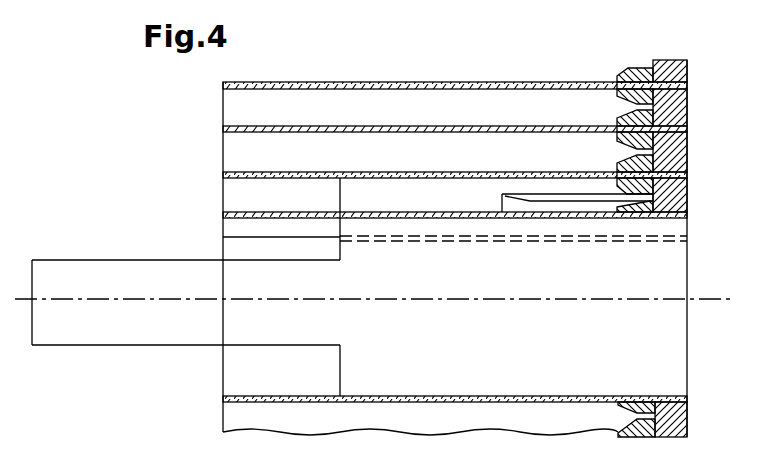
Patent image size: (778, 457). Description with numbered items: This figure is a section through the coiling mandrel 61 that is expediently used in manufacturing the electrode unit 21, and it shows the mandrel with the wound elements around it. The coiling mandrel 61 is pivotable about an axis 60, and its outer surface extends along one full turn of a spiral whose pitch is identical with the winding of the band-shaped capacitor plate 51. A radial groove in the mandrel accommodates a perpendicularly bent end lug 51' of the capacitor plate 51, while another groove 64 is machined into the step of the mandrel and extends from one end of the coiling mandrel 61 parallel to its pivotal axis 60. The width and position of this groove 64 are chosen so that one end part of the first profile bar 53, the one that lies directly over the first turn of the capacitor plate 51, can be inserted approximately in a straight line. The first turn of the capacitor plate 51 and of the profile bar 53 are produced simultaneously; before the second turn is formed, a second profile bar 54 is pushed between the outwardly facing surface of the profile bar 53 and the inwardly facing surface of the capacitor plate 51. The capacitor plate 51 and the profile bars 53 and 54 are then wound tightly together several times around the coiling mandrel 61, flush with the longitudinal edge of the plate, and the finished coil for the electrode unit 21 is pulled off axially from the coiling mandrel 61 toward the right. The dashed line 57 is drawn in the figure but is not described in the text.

The electrode unit 21 is at (699, 100).
The capacitor plate 51 is at (425, 242).
The end lug 51' is at (251, 223).
The profile bar 53 is at (672, 164).
The second profile bar 54 is at (687, 188).
The dashed passage line 57 is at (432, 243).
The axis 60 is at (515, 300).
The coiling mandrel 61 is at (670, 271).
The groove 64 is at (528, 194).